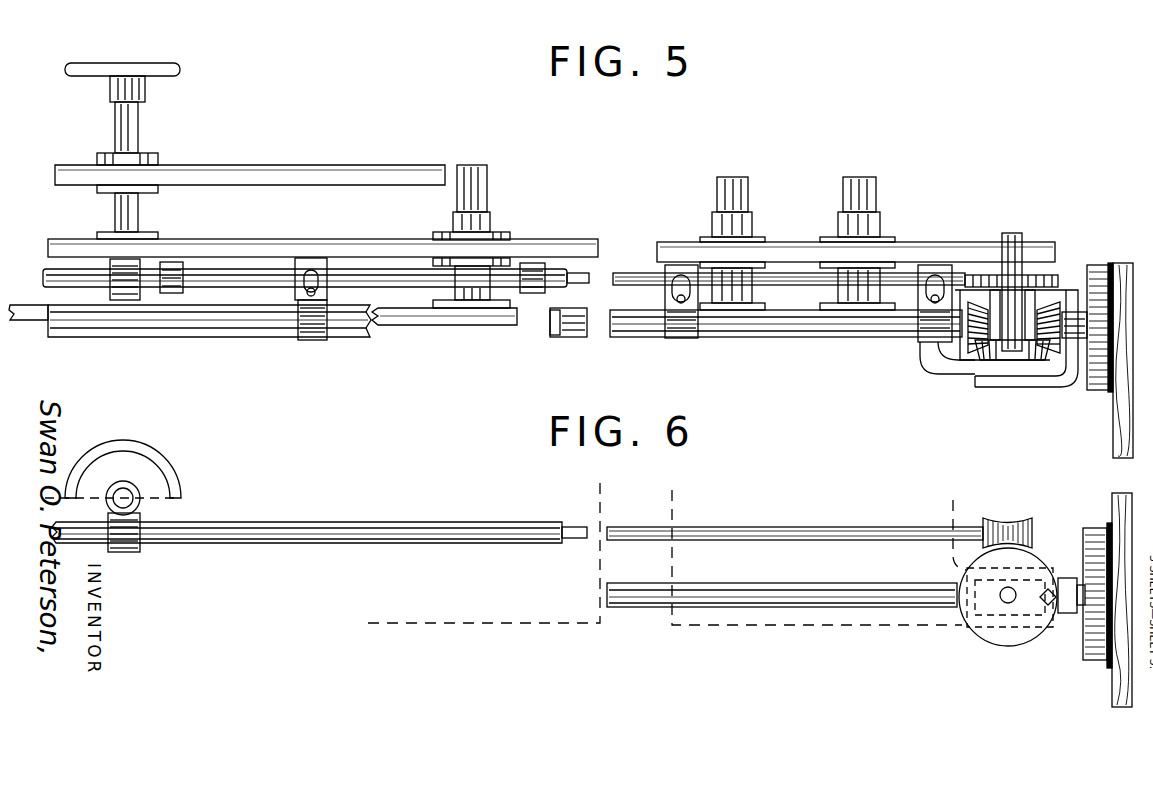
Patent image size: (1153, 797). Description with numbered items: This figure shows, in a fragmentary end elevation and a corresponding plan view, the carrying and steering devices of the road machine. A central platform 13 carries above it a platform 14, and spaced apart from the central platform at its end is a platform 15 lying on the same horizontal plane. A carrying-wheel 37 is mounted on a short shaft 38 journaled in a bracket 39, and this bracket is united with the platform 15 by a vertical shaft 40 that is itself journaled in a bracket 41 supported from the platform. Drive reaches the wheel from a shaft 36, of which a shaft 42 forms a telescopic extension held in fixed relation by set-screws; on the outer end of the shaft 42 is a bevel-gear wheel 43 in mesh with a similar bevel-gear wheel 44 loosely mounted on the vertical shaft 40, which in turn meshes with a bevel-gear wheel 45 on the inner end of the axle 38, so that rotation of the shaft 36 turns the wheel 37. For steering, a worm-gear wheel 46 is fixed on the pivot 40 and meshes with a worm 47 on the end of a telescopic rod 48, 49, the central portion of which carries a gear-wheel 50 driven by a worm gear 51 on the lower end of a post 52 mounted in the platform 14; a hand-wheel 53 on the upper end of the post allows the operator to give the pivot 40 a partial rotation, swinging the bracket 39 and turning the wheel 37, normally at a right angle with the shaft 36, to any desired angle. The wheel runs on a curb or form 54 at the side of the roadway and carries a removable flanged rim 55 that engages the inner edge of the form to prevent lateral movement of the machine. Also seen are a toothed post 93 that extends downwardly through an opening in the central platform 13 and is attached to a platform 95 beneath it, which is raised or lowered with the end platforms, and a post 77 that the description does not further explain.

In FIG. 5, the central platform 13 is at (257, 251).
In FIG. 6, the central platform 13 is at (525, 618).
In FIG. 5, the platform 14 is at (324, 181).
In FIG. 5, the platform 15 is at (790, 252).
In FIG. 6, the platform 15 is at (765, 623).
In FIG. 5, the shaft 36 is at (258, 338).
In FIG. 5, the carrying-wheel 37 is at (1122, 268).
In FIG. 6, the carrying-wheel 37 is at (1120, 545).
In FIG. 5, the short shaft 38 is at (1086, 336).
In FIG. 5, the bracket 39 is at (1030, 382).
In FIG. 6, the bracket 39 is at (1060, 585).
In FIG. 5, the vertical shaft 40 is at (1014, 322).
In FIG. 6, the vertical shaft 40 is at (1001, 603).
In FIG. 5, the bracket 41 is at (940, 352).
In FIG. 5, the shaft 42 is at (645, 332).
In FIG. 6, the shaft 42 is at (810, 594).
In FIG. 5, the bevel-gear wheel 43 is at (978, 305).
In FIG. 5, the bevel-gear wheel 44 is at (1012, 352).
In FIG. 5, the bevel-gear wheel 45 is at (1052, 312).
In FIG. 5, the worm-gear wheel 46 is at (1025, 272).
In FIG. 6, the worm-gear wheel 46 is at (1000, 641).
In FIG. 5, the worm 47 is at (1000, 260).
In FIG. 6, the worm 47 is at (1008, 518).
In FIG. 5, the telescopic rod 48 is at (640, 278).
In FIG. 6, the telescopic rod 48 is at (750, 540).
In FIG. 5, the telescopic rod 49 is at (352, 283).
In FIG. 6, the telescopic rod 49 is at (334, 538).
In FIG. 5, the gear-wheel 50 is at (128, 300).
In FIG. 6, the gear-wheel 50 is at (122, 546).
In FIG. 6, the worm gear 51 is at (128, 492).
In FIG. 5, the post 52 is at (128, 130).
In FIG. 6, the post 52 is at (123, 490).
In FIG. 5, the hand-wheel 53 is at (160, 70).
In FIG. 6, the hand-wheel 53 is at (172, 473).
In FIG. 5, the form 54 is at (1120, 420).
In FIG. 6, the form 54 is at (1120, 690).
In FIG. 5, the flanged rim 55 is at (1108, 392).
In FIG. 6, the flanged rim 55 is at (1106, 666).
In FIG. 5, the post 77 is at (727, 192).
In FIG. 5, the post 93 is at (478, 190).
In FIG. 5, the platform 95 is at (436, 318).